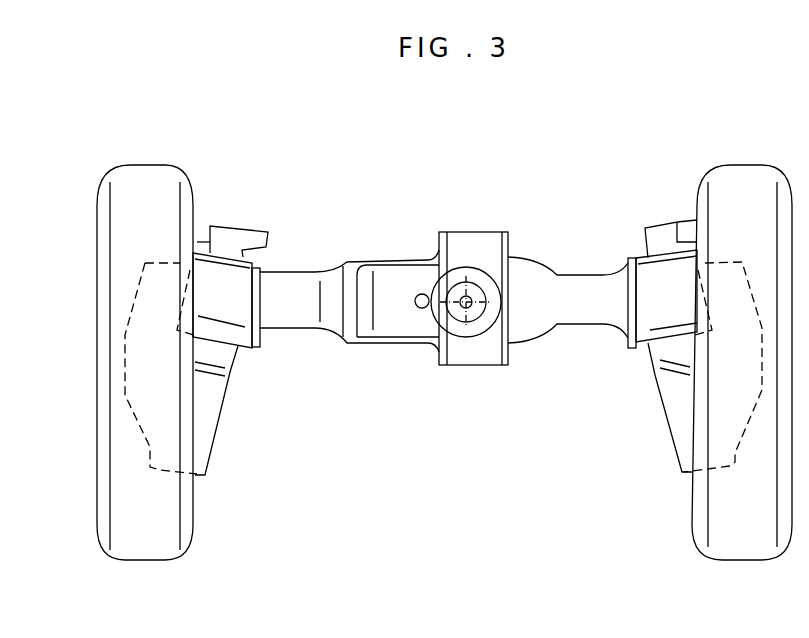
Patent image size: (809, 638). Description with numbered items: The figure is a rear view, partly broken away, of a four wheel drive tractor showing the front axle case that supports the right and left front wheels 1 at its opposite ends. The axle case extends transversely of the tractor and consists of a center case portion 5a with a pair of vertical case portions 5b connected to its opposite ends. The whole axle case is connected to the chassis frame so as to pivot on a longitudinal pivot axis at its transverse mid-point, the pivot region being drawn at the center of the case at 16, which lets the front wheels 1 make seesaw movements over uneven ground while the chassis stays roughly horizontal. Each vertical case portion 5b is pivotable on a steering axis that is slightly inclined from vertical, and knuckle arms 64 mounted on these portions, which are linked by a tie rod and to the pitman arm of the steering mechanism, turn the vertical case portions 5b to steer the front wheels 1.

The front wheels 1 is at (165, 562).
The center case portion 5a is at (350, 262).
The vertical case portions 5b is at (220, 408).
The pivot / center joint 16 is at (470, 300).
The knuckle arms 64 is at (255, 233).